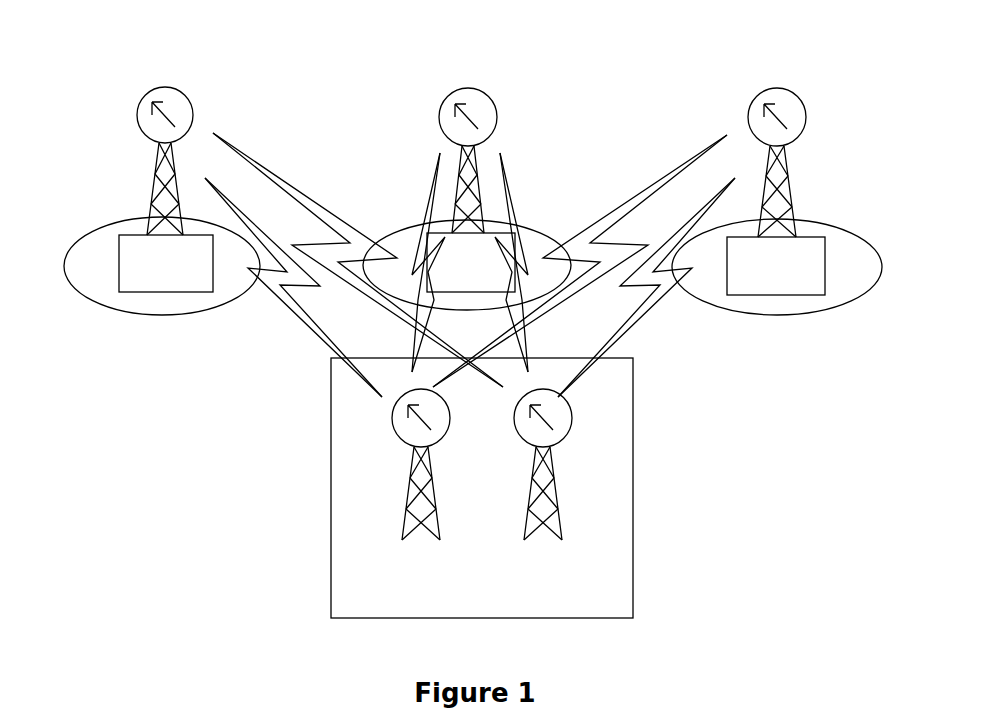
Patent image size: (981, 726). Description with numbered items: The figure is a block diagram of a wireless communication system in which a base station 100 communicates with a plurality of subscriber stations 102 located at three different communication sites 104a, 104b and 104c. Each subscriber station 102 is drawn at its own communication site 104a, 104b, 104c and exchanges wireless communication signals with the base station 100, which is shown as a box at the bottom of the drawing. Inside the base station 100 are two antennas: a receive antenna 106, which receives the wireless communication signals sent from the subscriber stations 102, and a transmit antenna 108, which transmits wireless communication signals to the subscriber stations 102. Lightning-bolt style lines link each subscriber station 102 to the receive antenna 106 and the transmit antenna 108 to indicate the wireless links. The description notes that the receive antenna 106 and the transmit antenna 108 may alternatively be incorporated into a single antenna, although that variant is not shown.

The base station 100 is at (470, 396).
The subscriber station 102 is at (137, 188).
The communication site 104a is at (166, 177).
The communication site 104b is at (469, 175).
The communication site 104c is at (778, 177).
The receive antenna 106 is at (413, 495).
The transmit antenna 108 is at (557, 495).